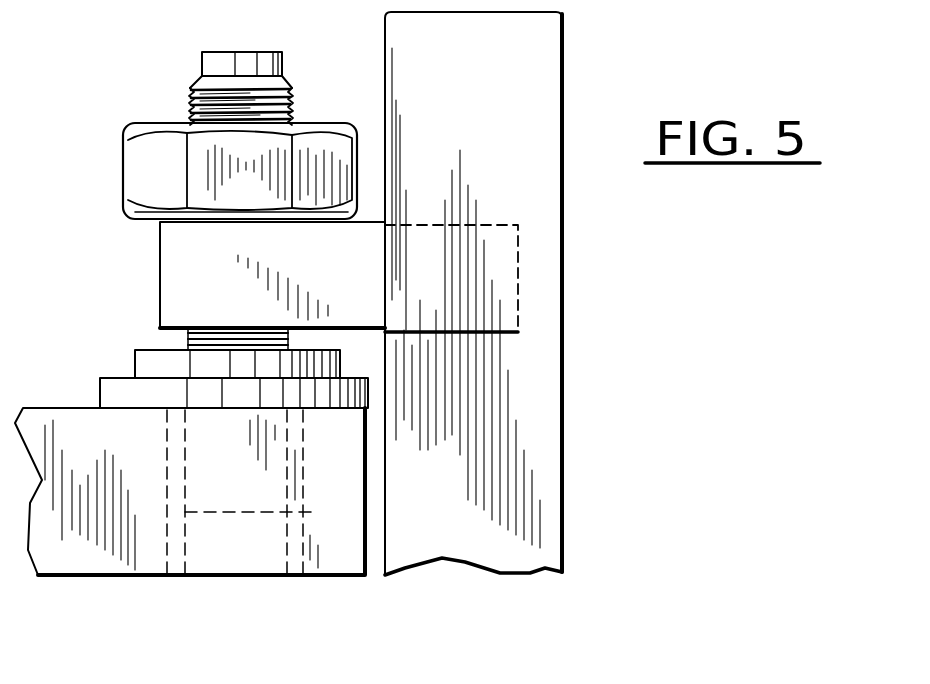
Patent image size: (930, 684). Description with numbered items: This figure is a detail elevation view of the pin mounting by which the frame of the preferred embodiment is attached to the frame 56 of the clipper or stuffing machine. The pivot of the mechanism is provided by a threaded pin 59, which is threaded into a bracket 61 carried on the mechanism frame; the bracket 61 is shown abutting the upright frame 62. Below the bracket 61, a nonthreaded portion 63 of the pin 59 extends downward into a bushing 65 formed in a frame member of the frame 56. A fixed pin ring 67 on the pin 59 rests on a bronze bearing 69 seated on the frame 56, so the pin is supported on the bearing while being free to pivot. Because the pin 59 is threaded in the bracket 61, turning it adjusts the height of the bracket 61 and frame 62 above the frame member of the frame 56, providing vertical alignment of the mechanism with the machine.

The threaded pin 59 is at (215, 72).
The bracket 61 is at (176, 254).
The fixed pin ring 67 is at (152, 362).
The bronze bearing 69 is at (117, 393).
The frame 56 is at (90, 560).
The frame 62 is at (528, 355).
The nonthreaded portion 63 is at (270, 492).
The bushing 65 is at (230, 562).